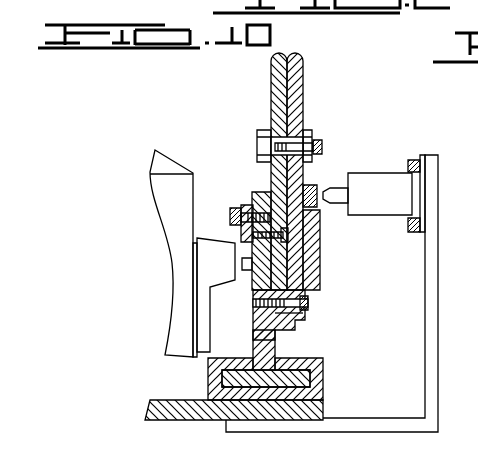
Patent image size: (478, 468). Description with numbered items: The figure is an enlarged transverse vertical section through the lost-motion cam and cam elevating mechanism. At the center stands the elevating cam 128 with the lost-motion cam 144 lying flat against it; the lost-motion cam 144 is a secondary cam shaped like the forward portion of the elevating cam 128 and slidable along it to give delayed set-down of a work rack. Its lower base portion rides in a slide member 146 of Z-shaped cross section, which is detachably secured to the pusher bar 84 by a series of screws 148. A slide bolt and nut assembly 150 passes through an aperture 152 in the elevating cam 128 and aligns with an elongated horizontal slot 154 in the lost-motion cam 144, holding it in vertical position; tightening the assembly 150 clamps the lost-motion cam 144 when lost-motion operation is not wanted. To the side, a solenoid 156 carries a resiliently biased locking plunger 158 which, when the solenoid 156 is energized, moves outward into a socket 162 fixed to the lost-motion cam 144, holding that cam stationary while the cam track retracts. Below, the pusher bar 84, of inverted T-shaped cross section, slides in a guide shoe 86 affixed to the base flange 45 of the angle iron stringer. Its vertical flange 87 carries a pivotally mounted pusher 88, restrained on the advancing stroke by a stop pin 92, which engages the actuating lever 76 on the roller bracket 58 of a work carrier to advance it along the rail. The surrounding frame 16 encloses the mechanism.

The frame 16 is at (437, 380).
The base flange 45 is at (323, 412).
The roller bracket 58 is at (172, 192).
The actuating lever 76 is at (210, 258).
The pusher bar 84 is at (272, 347).
The guide shoes 86 is at (310, 377).
The vertical flange 87 is at (263, 326).
The pushers 88 is at (241, 242).
The stop pin 92 is at (242, 266).
The elevating cam 128 is at (275, 83).
The lost-motion cam 144 is at (302, 63).
The slide member 146 is at (313, 268).
The screws 148 is at (308, 303).
The slide bolt and nut assembly 150 is at (313, 147).
The aperture 152 is at (268, 147).
The elongated horizontal slot 154 is at (303, 133).
The solenoid 156 is at (382, 183).
The locking plunger 158 is at (347, 202).
The socket 162 is at (320, 207).